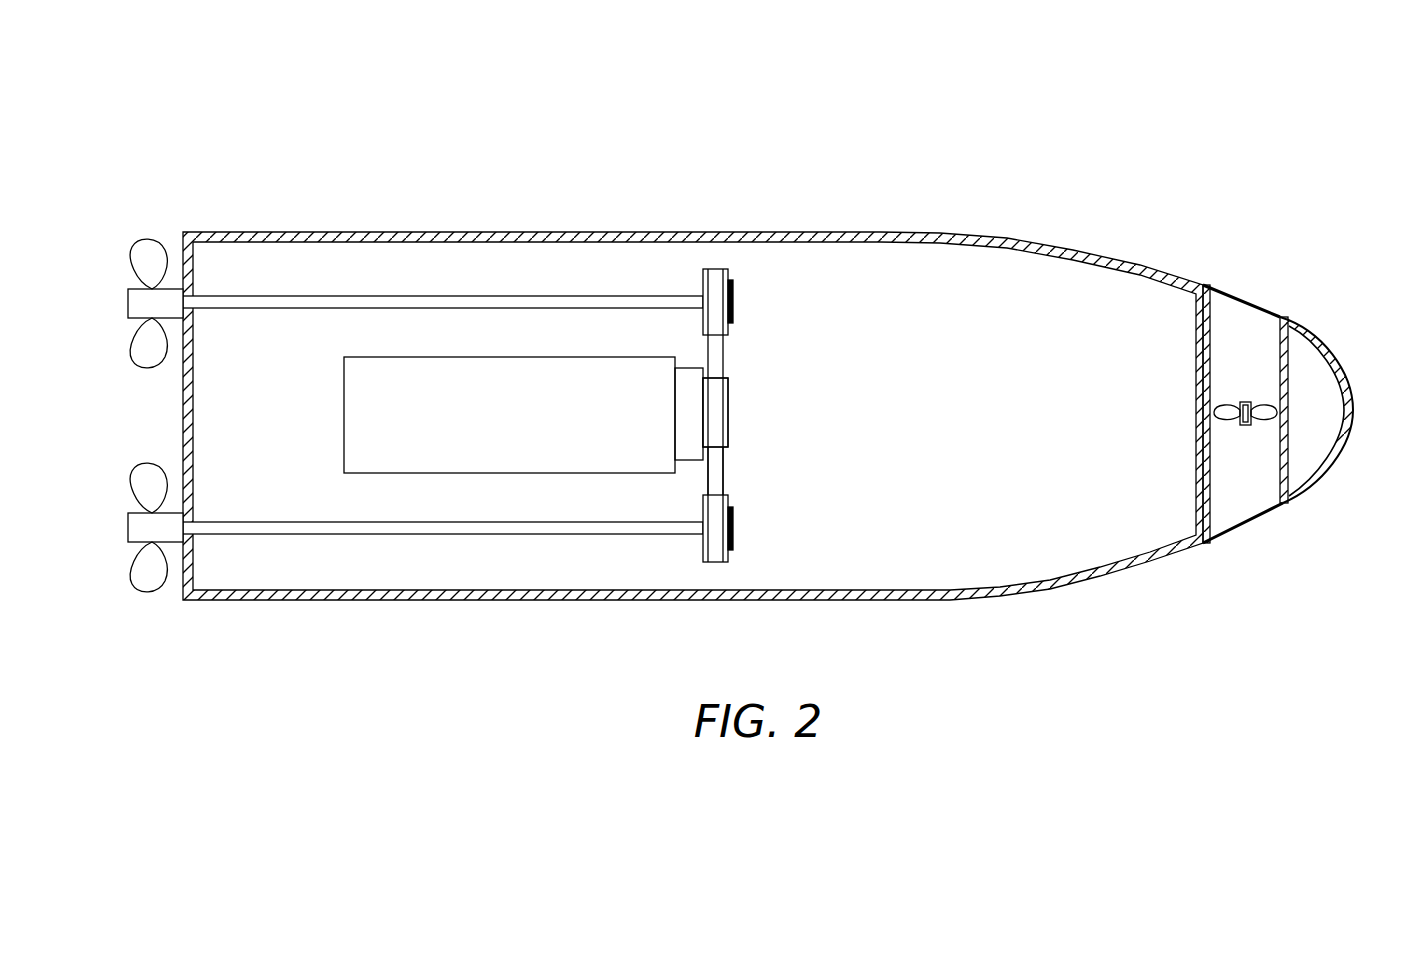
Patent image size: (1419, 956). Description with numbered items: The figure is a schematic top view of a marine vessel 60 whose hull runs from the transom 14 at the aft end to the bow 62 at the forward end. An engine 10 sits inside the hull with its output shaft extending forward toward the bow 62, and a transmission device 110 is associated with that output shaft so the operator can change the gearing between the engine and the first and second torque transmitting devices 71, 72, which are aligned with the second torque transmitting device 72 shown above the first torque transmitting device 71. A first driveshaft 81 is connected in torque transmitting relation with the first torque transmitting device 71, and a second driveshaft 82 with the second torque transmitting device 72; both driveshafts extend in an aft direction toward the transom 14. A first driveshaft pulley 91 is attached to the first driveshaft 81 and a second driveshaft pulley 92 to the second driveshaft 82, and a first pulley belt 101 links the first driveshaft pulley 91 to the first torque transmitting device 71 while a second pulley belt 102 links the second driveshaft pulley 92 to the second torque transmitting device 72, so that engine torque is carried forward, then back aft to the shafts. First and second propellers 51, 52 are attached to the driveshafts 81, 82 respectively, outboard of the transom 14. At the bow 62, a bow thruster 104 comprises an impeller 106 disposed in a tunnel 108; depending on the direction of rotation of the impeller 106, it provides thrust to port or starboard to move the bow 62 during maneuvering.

The marine vessel 60 is at (659, 328).
The transom 14 is at (183, 414).
The first propeller 51 is at (128, 304).
The second propeller 52 is at (128, 528).
The first driveshaft 81 is at (502, 296).
The second driveshaft 82 is at (520, 540).
The engine 10 is at (344, 448).
The transmission device 110 is at (690, 452).
The first driveshaft pulley 91 is at (733, 296).
The second driveshaft pulley 92 is at (733, 528).
The first pulley belt 101 is at (727, 356).
The second pulley belt 102 is at (728, 475).
The first torque transmitting device 71 is at (730, 407).
The second torque transmitting device 72 is at (715, 412).
The bow thruster 104 is at (1248, 402).
The impeller 106 is at (1252, 425).
The tunnel 108 is at (1215, 500).
The bow 62 is at (1337, 372).